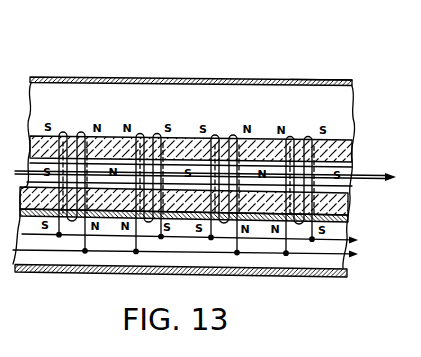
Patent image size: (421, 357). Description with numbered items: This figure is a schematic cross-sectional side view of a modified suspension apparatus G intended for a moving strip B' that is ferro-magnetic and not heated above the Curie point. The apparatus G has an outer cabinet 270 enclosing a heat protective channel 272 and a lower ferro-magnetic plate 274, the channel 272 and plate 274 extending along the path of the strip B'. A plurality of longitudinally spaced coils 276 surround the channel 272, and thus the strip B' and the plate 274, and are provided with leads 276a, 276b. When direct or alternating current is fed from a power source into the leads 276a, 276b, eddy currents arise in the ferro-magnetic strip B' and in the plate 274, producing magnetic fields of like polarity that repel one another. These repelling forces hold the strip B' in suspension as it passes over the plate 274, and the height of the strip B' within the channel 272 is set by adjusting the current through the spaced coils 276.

The outer cabinet 270 is at (234, 77).
The apparatus G is at (306, 74).
The heat protective channel 272 is at (108, 142).
The lower ferro-magnetic plate 274 is at (340, 217).
The strip B' is at (206, 145).
The longitudinally spaced coils 276 is at (63, 131).
The lead 276a is at (354, 230).
The lead 276b is at (342, 265).